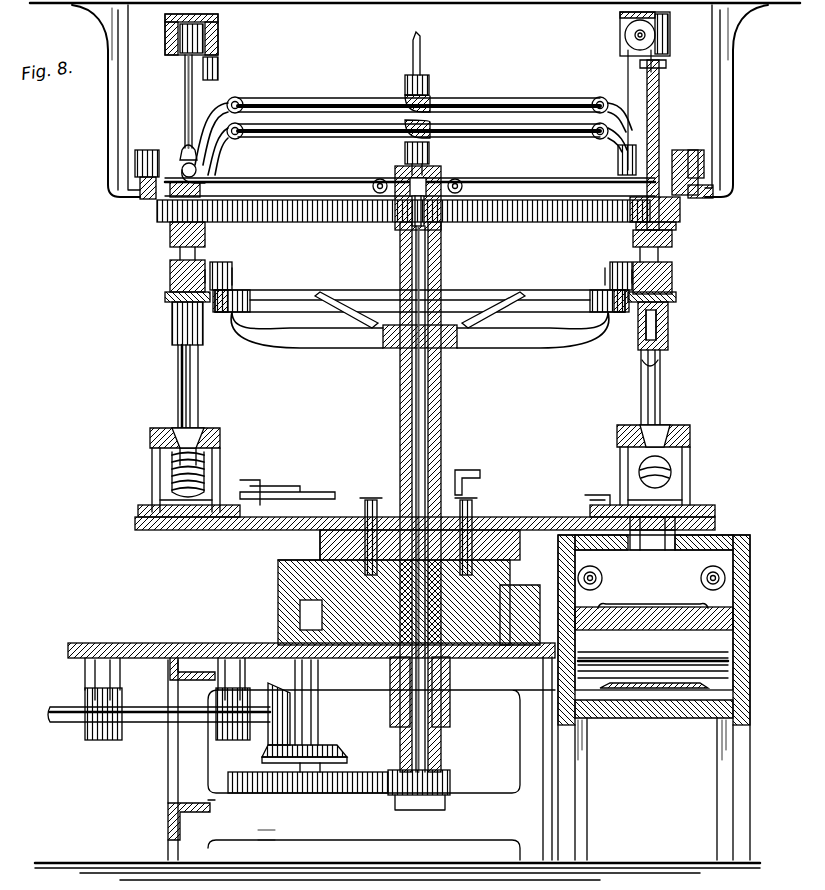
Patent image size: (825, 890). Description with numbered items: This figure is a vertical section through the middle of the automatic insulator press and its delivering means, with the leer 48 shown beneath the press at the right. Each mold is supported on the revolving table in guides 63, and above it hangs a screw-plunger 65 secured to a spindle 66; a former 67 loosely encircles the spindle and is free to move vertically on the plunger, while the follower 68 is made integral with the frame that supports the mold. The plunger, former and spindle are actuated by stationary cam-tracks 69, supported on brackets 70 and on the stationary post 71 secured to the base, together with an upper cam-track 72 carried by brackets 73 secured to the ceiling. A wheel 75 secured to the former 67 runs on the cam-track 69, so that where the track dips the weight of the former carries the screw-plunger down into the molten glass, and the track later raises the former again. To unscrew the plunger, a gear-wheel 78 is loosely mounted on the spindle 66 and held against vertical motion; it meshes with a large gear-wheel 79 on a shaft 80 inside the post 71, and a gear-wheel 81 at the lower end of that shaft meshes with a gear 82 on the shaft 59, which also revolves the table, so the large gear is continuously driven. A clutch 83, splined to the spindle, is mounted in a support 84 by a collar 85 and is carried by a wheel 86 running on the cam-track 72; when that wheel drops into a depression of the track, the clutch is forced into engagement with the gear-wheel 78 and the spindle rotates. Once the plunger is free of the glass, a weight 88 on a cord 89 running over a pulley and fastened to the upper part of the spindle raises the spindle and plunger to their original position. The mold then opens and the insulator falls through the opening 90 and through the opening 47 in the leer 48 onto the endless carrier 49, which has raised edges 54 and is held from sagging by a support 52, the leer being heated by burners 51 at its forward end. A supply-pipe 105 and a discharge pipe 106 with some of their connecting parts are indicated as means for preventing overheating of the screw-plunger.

The opening 47 is at (660, 552).
The leer 48 is at (750, 648).
The carrier 49 is at (652, 607).
The burners 51 is at (597, 576).
The support 52 is at (648, 630).
The raised edges 54 is at (604, 606).
The shaft 59 is at (320, 714).
The guides 63 is at (698, 510).
The screw-plungers 65 is at (172, 466).
The spindle 66 is at (196, 392).
The former 67 is at (668, 322).
The follower 68 is at (168, 428).
The cam-tracks 69 is at (470, 293).
The brackets 70 is at (330, 342).
The stationary post 71 is at (400, 404).
The cam-track 72 is at (488, 180).
The brackets 73 is at (107, 118).
The wheel 75 is at (220, 270).
The gear-wheel 78 is at (172, 233).
The large gear-wheel 79 is at (348, 218).
The shaft 80 is at (428, 254).
The gear-wheel 81 is at (450, 780).
The gear 82 is at (248, 772).
The clutch 83 is at (165, 199).
The support 84 is at (663, 175).
The collar 85 is at (712, 190).
The wheel 86 is at (700, 150).
The weight 88 is at (618, 158).
The cord 89 is at (628, 66).
The opening 90 is at (665, 527).
The supply-pipe 105 is at (422, 44).
The discharge pipe 106 is at (345, 130).